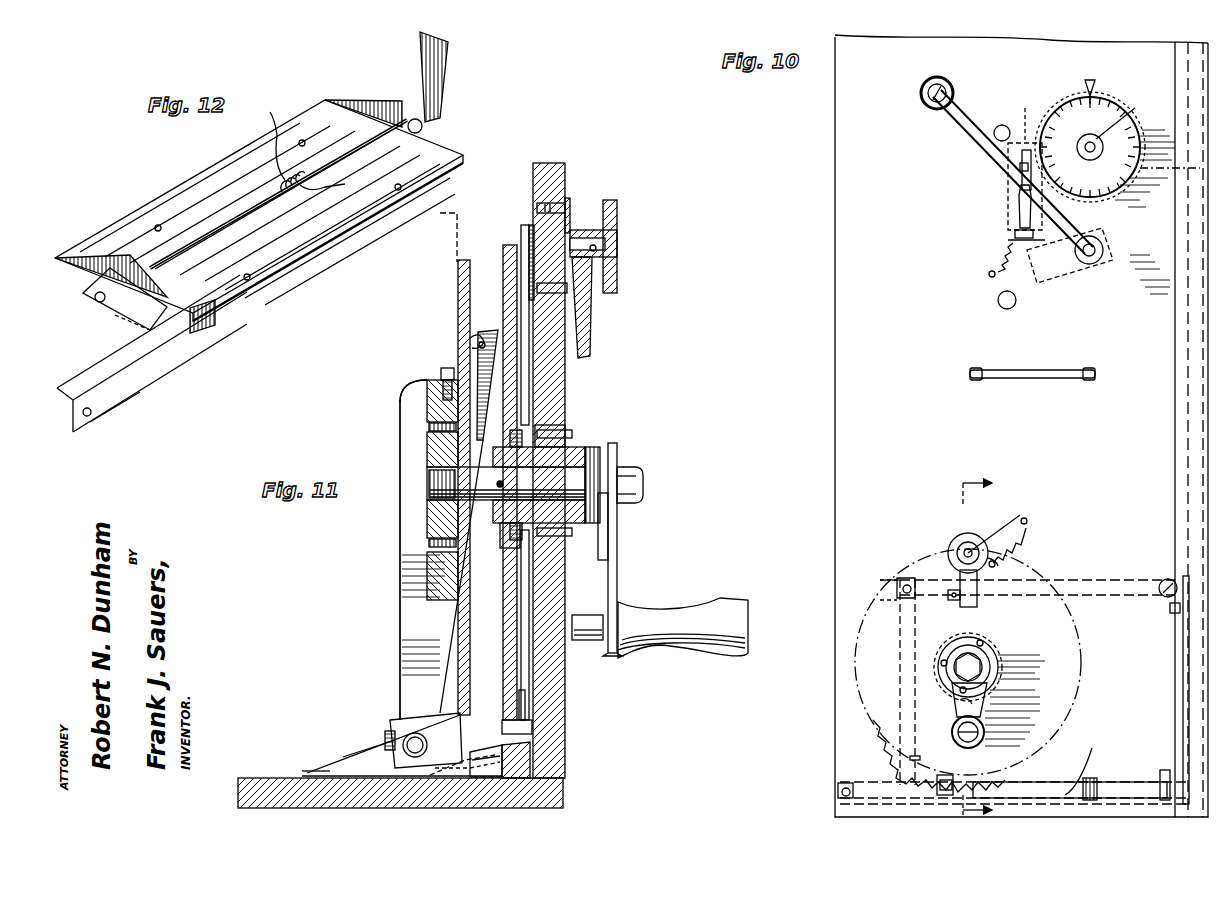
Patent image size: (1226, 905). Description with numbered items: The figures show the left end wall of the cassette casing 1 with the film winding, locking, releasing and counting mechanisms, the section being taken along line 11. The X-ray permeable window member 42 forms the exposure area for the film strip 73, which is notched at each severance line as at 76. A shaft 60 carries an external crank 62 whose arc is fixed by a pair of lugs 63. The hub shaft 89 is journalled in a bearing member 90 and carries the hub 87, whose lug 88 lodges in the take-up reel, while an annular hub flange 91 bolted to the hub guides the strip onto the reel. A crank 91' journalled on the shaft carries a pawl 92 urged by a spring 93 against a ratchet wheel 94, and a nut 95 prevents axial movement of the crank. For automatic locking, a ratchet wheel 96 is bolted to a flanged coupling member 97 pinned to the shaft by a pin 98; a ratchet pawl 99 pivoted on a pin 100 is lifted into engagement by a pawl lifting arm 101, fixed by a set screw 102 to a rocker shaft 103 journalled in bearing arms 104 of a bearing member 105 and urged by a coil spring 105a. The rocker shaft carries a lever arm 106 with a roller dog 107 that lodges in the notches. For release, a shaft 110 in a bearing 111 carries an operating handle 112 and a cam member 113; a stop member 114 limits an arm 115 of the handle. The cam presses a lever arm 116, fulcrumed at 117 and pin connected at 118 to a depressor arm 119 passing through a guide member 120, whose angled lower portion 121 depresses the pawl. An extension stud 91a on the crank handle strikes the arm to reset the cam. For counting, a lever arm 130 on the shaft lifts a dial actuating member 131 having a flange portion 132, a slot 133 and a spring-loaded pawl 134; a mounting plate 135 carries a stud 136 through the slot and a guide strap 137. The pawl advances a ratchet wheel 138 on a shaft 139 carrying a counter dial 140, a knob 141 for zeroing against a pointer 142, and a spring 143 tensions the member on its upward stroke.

In FIG. 11, the casing 1 is at (563, 795).
In FIG. 10, the casing 1 is at (835, 292).
In FIG. 10, the section line 11 is at (990, 647).
In FIG. 10, the X-ray permeable window member 42 is at (1176, 352).
In FIG. 10, the shaft 60 is at (1103, 249).
In FIG. 10, the crank 62 is at (925, 102).
In FIG. 10, the lugs 63 is at (998, 126).
In FIG. 11, the film strip 73 is at (436, 237).
In FIG. 11, the notch 76 is at (450, 355).
In FIG. 11, the hub 87 is at (427, 405).
In FIG. 11, the lug 88 is at (441, 372).
In FIG. 11, the hub shaft 89 is at (427, 492).
In FIG. 11, the bearing member 90 is at (575, 450).
In FIG. 10, the bearing member 90 is at (993, 668).
In FIG. 11, the hub flange 91 is at (455, 487).
In FIG. 10, the hub flange 91 is at (952, 732).
In FIG. 11, the crank 91' is at (683, 616).
In FIG. 11, the extension stud 91a is at (583, 614).
In FIG. 11, the pawl 92 is at (603, 527).
In FIG. 10, the pawl 92 is at (952, 700).
In FIG. 11, the spring 93 is at (617, 563).
In FIG. 10, the spring 93 is at (958, 710).
In FIG. 11, the ratchet wheel 94 is at (600, 446).
In FIG. 10, the ratchet wheel 94 is at (940, 662).
In FIG. 11, the nut 95 is at (635, 466).
In FIG. 10, the nut 95 is at (975, 660).
In FIG. 11, the ratchet wheel 96 is at (506, 252).
In FIG. 10, the ratchet wheel 96 is at (1078, 632).
In FIG. 11, the flanged coupling member 97 is at (512, 545).
In FIG. 11, the pin 98 is at (500, 486).
In FIG. 12, the ratchet pawl 99 is at (118, 402).
In FIG. 11, the ratchet pawl 99 is at (470, 760).
In FIG. 10, the ratchet pawl 99 is at (844, 784).
In FIG. 11, the pin 100 is at (490, 765).
In FIG. 10, the pin 100 is at (838, 793).
In FIG. 12, the pawl lifting arm 101 is at (115, 320).
In FIG. 11, the pawl lifting arm 101 is at (421, 718).
In FIG. 10, the pawl lifting arm 101 is at (948, 778).
In FIG. 11, the set screw 102 is at (403, 738).
In FIG. 12, the rocker shaft 103 is at (210, 232).
In FIG. 11, the rocker shaft 103 is at (385, 743).
In FIG. 10, the rocker shaft 103 is at (1089, 761).
In FIG. 12, the bearing arms 104 is at (365, 100).
In FIG. 11, the bearing arms 104 is at (343, 757).
In FIG. 10, the bearing arms 104 is at (965, 780).
In FIG. 12, the bearing member 105 is at (222, 163).
In FIG. 11, the bearing member 105 is at (315, 772).
In FIG. 10, the bearing member 105 is at (1073, 782).
In FIG. 12, the coil spring 105a is at (300, 142).
In FIG. 11, the coil spring 105a is at (480, 750).
In FIG. 10, the coil spring 105a is at (1090, 778).
In FIG. 12, the lever arm 106 is at (445, 76).
In FIG. 11, the lever arm 106 is at (400, 608).
In FIG. 10, the lever arm 106 is at (1183, 652).
In FIG. 11, the dog 107 is at (470, 336).
In FIG. 10, the dog 107 is at (1170, 608).
In FIG. 11, the shaft 110 is at (618, 242).
In FIG. 10, the shaft 110 is at (999, 532).
In FIG. 11, the bearing 111 is at (568, 205).
In FIG. 11, the operating handle 112 is at (618, 280).
In FIG. 10, the operating handle 112 is at (956, 540).
In FIG. 11, the cam member 113 is at (528, 232).
In FIG. 10, the cam member 113 is at (1000, 562).
In FIG. 10, the stop member 114 is at (950, 600).
In FIG. 11, the arm 115 is at (592, 345).
In FIG. 10, the arm 115 is at (977, 604).
In FIG. 11, the lever arm 116 is at (570, 318).
In FIG. 10, the lever arm 116 is at (1092, 579).
In FIG. 10, the fulcrum 117 is at (1163, 580).
In FIG. 11, the pin connection 118 is at (506, 316).
In FIG. 10, the pin connection 118 is at (893, 580).
In FIG. 11, the depressor arm 119 is at (532, 384).
In FIG. 10, the depressor arm 119 is at (882, 600).
In FIG. 11, the guide member 120 is at (530, 684).
In FIG. 10, the guide member 120 is at (910, 757).
In FIG. 11, the angled lower portion 121 is at (535, 715).
In FIG. 10, the angled lower portion 121 is at (900, 768).
In FIG. 10, the lever arm 130 is at (1075, 280).
In FIG. 10, the dial actuating member 131 is at (1008, 208).
In FIG. 10, the flange portion 132 is at (1008, 240).
In FIG. 10, the slot 133 is at (1012, 222).
In FIG. 10, the spring-loaded pawl 134 is at (1023, 116).
In FIG. 10, the mounting plate 135 is at (1020, 168).
In FIG. 10, the stud 136 is at (1018, 193).
In FIG. 10, the guide strap 137 is at (1022, 158).
In FIG. 10, the ratchet wheel 138 is at (1145, 212).
In FIG. 10, the shaft 139 is at (1092, 157).
In FIG. 10, the counter dial 140 is at (1108, 104).
In FIG. 10, the knob 141 is at (1132, 119).
In FIG. 10, the pointer 142 is at (1094, 78).
In FIG. 10, the spring 143 is at (995, 264).